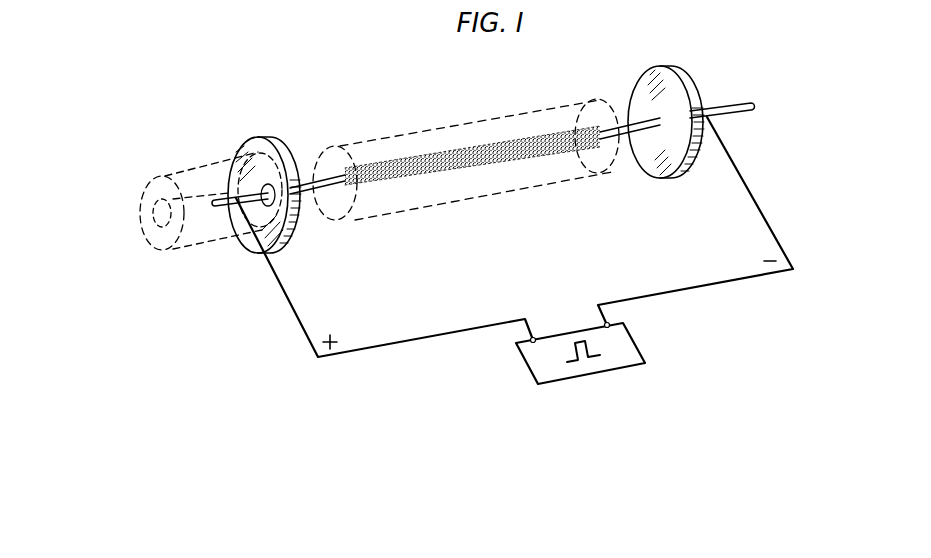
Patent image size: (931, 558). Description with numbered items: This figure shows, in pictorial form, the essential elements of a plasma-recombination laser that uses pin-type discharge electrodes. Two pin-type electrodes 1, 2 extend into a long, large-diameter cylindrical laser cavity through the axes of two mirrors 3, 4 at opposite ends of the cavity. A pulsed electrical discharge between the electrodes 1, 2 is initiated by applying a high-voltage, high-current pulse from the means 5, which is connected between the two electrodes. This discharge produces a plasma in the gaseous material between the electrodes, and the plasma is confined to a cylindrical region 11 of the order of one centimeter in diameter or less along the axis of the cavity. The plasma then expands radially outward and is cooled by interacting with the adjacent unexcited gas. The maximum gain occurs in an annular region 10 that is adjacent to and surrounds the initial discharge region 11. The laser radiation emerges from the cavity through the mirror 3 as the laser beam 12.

The electrode 1 is at (232, 192).
The electrode 2 is at (748, 103).
The mirror 3 is at (289, 150).
The mirror 4 is at (688, 82).
The means 5 is at (571, 330).
The annular region 10 is at (541, 105).
The cylindrical region 11 is at (453, 160).
The laser beam 12 is at (158, 186).